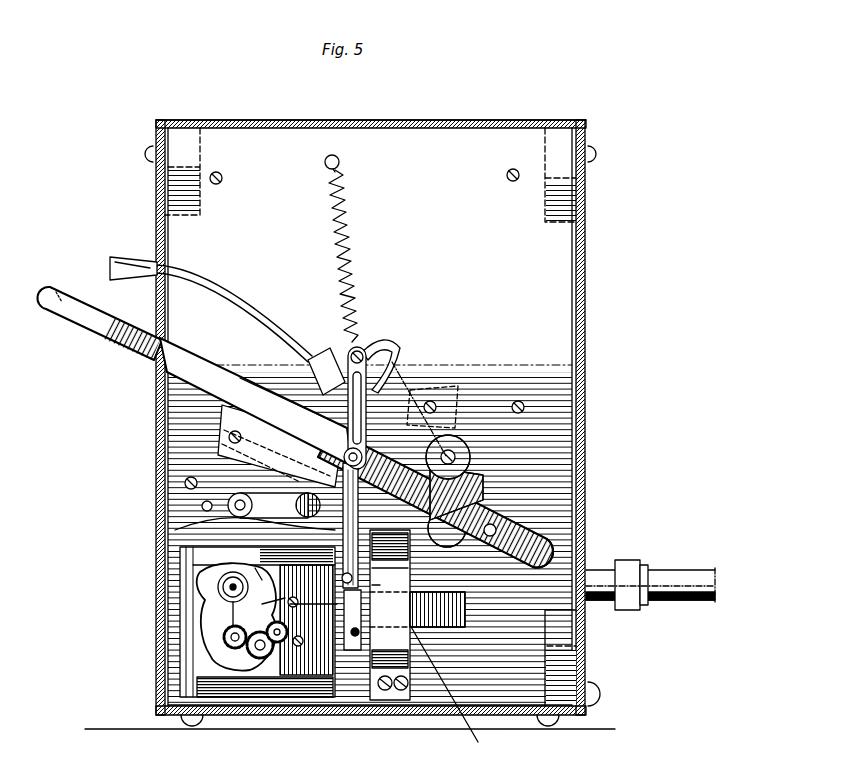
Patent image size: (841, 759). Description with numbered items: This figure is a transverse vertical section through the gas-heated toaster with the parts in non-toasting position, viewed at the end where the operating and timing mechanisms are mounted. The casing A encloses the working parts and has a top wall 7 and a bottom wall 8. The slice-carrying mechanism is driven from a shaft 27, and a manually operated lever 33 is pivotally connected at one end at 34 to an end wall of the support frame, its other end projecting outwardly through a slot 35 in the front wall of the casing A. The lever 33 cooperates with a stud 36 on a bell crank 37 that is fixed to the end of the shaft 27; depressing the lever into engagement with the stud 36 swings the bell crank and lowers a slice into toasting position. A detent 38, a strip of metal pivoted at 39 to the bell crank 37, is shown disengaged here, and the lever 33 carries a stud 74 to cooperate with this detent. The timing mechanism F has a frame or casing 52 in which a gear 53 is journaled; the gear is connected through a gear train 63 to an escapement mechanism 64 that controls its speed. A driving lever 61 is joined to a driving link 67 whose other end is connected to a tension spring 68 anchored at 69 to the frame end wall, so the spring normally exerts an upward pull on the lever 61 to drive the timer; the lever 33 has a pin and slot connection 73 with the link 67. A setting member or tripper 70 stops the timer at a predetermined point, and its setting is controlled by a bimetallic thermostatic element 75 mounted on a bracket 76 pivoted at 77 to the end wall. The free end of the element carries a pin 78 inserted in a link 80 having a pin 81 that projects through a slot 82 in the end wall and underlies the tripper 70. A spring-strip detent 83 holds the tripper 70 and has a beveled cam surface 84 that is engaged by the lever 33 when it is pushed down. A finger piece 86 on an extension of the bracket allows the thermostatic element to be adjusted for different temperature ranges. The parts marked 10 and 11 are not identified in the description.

The top wall 7 is at (290, 121).
The bottom wall 8 is at (443, 716).
The conductor wires 10 is at (301, 609).
The conduit connection 11 is at (606, 570).
The shaft 27 is at (330, 463).
The manually operated lever 33 is at (185, 375).
The pivotal connection 34 is at (548, 548).
The slot 35 is at (172, 475).
The stud 36 is at (313, 478).
The bell crank 37 is at (170, 534).
The detent 38 is at (487, 480).
The pivotal connection 39 is at (218, 436).
The frame 52 is at (255, 618).
The gear 53 is at (262, 567).
The driving lever 61 is at (364, 586).
The gear train 63 is at (270, 650).
The escapement mechanism 64 is at (225, 600).
The driving link 67 is at (363, 506).
The tension spring 68 is at (357, 275).
The spring connection 69 is at (340, 162).
The tripper 70 is at (417, 603).
The pin and slot connection 73 is at (310, 430).
The stud 74 is at (500, 530).
The bimetallic thermostatic element 75 is at (418, 393).
The bracket 76 is at (457, 388).
The pivotal connection 77 is at (443, 405).
The pin 78 is at (297, 386).
The link 80 is at (298, 446).
The pin 81 is at (380, 618).
The slot 82 is at (360, 655).
The detent 83 is at (450, 692).
The cam surface 84 is at (390, 573).
The finger piece 86 is at (150, 280).
The casing A is at (588, 352).
The timing mechanism F is at (188, 594).